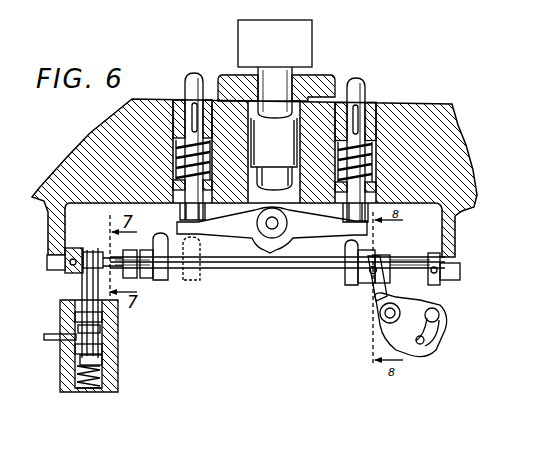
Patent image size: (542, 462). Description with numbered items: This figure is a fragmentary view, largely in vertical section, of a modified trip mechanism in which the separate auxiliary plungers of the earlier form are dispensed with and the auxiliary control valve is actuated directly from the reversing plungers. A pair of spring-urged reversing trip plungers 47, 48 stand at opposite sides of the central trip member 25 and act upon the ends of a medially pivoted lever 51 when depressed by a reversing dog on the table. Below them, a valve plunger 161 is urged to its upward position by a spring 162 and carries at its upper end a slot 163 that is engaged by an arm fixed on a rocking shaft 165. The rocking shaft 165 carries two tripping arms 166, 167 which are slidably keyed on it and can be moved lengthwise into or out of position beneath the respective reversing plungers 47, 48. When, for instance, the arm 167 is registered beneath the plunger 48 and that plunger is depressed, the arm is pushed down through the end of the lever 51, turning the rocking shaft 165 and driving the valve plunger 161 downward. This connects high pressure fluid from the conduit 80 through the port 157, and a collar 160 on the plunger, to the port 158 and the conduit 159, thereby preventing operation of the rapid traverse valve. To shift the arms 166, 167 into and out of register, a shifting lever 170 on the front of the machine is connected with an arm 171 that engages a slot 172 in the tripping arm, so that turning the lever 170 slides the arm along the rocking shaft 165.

The plunger block 25 is at (303, 43).
The reversing trip plunger 47 is at (202, 76).
The reversing trip plunger 48 is at (362, 81).
The medially pivoted lever 51 is at (298, 235).
The high pressure conduit 80 is at (54, 340).
The port 157 is at (79, 352).
The port 158 is at (70, 328).
The conduit 159 is at (57, 337).
The collar 160 is at (72, 316).
The valve plunger 161 is at (87, 290).
The spring 162 is at (72, 382).
The slot 163 is at (68, 252).
The rocking shaft 165 is at (270, 271).
The arm 166 is at (164, 269).
The arm 167 is at (353, 279).
The shifting lever 170 is at (412, 311).
The arm 171 is at (374, 294).
The slot 172 is at (376, 255).